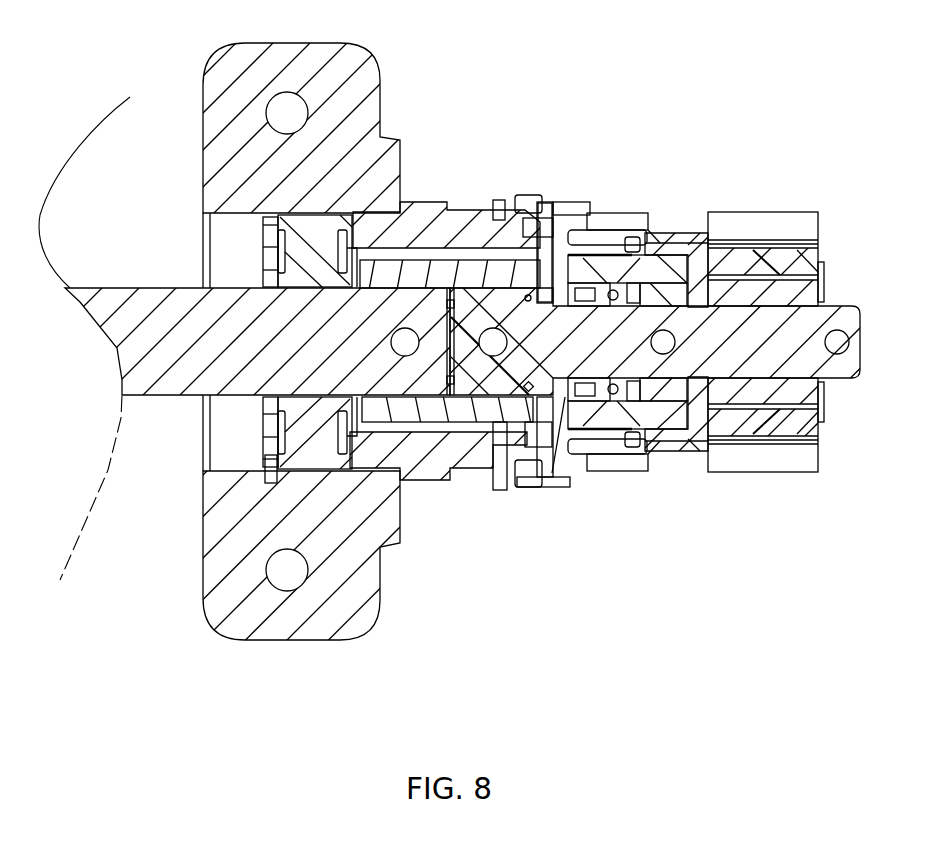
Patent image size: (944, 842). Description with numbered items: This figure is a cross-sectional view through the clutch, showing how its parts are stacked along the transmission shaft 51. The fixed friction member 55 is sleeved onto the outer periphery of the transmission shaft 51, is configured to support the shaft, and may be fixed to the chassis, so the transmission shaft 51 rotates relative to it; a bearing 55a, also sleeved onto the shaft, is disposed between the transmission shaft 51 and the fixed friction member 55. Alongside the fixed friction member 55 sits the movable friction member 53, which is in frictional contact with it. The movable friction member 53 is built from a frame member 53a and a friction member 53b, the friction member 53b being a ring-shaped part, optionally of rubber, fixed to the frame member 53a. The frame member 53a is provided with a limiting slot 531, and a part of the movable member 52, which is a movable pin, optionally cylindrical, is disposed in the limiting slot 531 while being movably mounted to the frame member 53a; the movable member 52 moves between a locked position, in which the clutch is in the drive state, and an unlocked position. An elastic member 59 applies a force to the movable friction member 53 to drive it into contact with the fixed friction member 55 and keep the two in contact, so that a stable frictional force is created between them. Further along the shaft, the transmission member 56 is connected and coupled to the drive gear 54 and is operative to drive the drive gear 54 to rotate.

The transmission shaft 51 is at (167, 392).
The movable member 52 is at (592, 418).
The movable friction member 53 is at (539, 349).
The frame member 53a is at (553, 197).
The friction member 53b is at (535, 222).
The limiting slot 531 is at (552, 300).
The drive gear 54 is at (760, 458).
The fixed friction member 55 is at (317, 625).
The bearing 55a is at (350, 219).
The transmission member 56 is at (682, 219).
The elastic member 59 is at (590, 240).